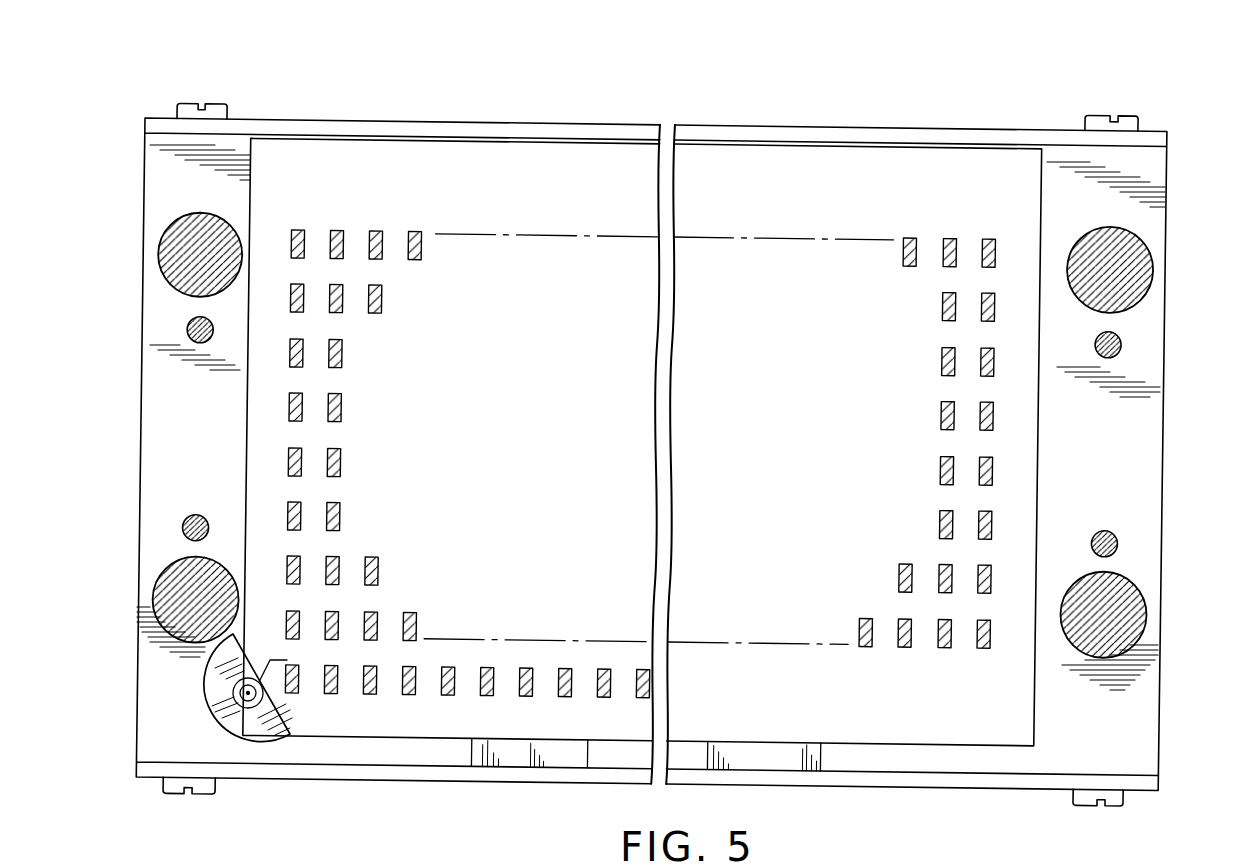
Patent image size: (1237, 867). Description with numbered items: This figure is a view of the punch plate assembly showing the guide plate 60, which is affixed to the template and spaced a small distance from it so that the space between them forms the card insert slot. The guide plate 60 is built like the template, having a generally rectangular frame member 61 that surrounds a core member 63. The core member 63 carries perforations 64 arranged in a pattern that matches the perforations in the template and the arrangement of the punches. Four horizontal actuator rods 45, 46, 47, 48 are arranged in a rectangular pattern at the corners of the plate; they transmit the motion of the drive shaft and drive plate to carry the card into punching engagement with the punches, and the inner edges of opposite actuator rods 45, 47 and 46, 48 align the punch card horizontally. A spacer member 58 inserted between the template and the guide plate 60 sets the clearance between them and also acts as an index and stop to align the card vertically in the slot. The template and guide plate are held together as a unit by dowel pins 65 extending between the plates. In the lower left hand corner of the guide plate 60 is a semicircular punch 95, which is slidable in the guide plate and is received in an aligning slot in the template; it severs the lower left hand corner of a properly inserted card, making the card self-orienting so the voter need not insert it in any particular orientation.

The guide plate 60 is at (318, 92).
The frame member 61 is at (162, 193).
The core member 63 is at (458, 165).
The perforations 64 is at (421, 231).
The horizontal actuator rod 45 is at (172, 253).
The horizontal actuator rod 46 is at (168, 595).
The horizontal actuator rod 47 is at (1138, 270).
The horizontal actuator rod 48 is at (1125, 600).
The dowel pins 65 is at (187, 331).
The semicircular punch 95 is at (261, 735).
The spacer member 58 is at (530, 757).